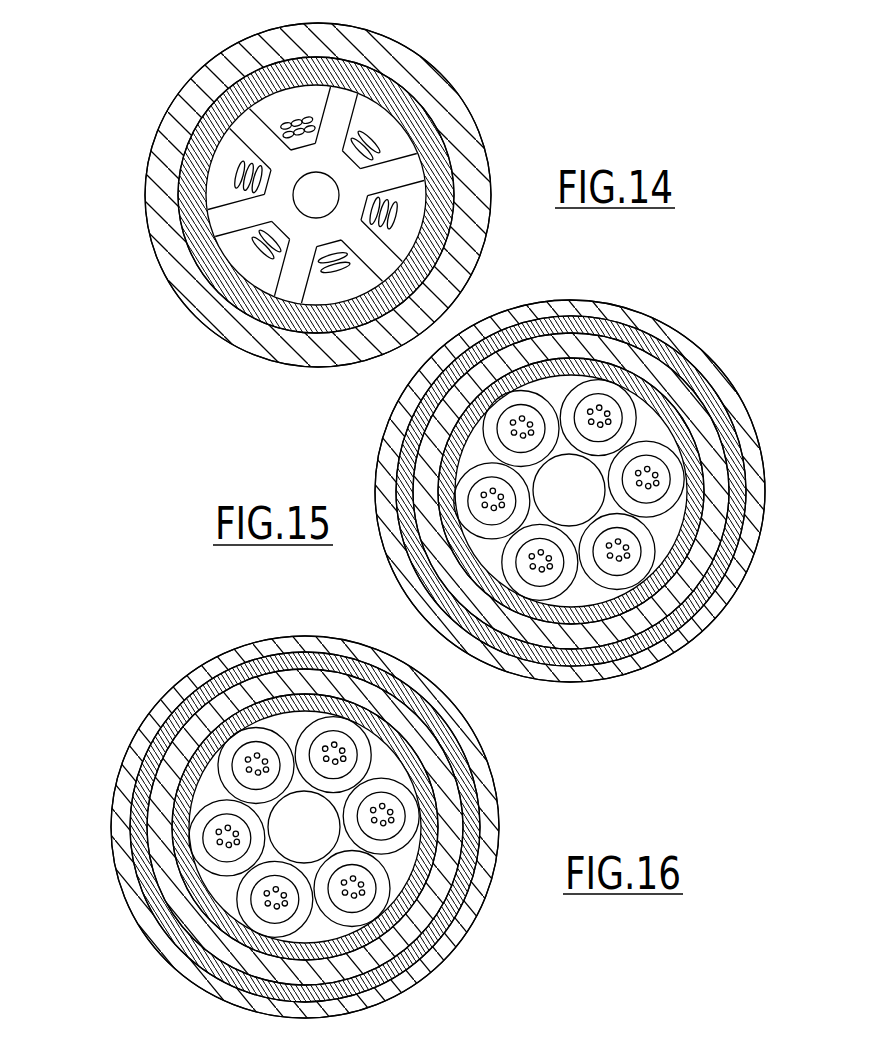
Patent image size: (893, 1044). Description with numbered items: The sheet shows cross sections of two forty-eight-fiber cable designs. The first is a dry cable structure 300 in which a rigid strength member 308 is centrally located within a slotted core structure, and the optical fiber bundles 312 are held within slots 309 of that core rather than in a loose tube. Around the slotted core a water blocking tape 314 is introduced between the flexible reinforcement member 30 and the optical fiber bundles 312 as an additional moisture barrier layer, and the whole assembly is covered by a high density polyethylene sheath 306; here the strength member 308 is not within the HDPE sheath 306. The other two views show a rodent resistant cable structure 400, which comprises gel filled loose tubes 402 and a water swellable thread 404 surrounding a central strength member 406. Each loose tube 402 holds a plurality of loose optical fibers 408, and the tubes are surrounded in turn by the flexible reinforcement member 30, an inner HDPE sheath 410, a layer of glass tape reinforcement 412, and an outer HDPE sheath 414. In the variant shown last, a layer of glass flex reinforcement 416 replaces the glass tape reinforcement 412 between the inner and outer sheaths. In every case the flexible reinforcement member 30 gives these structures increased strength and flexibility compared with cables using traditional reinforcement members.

In FIG. 14, the dry cable structure 300 is at (480, 75).
In FIG. 14, the HDPE sheath 306 is at (468, 153).
In FIG. 14, the flexible reinforcement member 30 is at (200, 147).
In FIG. 15, the flexible reinforcement member 30 is at (700, 444).
In FIG. 16, the flexible reinforcement member 30 is at (425, 807).
In FIG. 14, the water blocking tape 314 is at (183, 180).
In FIG. 14, the strength member 308 is at (302, 197).
In FIG. 14, the optical fiber bundles 312 is at (292, 118).
In FIG. 14, the slots 309 is at (365, 139).
In FIG. 15, the rodent resistant cable structure 400 is at (706, 308).
In FIG. 16, the rodent resistant cable structure 400 is at (88, 773).
In FIG. 15, the outer HDPE sheath 414 is at (609, 312).
In FIG. 16, the outer HDPE sheath 414 is at (206, 672).
In FIG. 16, the glass flex reinforcement 416 is at (176, 692).
In FIG. 15, the glass tape reinforcement 412 is at (581, 320).
In FIG. 15, the inner HDPE sheath 410 is at (724, 486).
In FIG. 16, the inner HDPE sheath 410 is at (427, 910).
In FIG. 15, the water swellable thread 404 is at (637, 432).
In FIG. 16, the water swellable thread 404 is at (338, 783).
In FIG. 15, the gel filled loose tube 402 is at (641, 572).
In FIG. 16, the gel filled loose tube 402 is at (370, 913).
In FIG. 15, the loose optical fibers 408 is at (634, 545).
In FIG. 16, the loose optical fibers 408 is at (367, 885).
In FIG. 15, the central strength member 406 is at (578, 500).